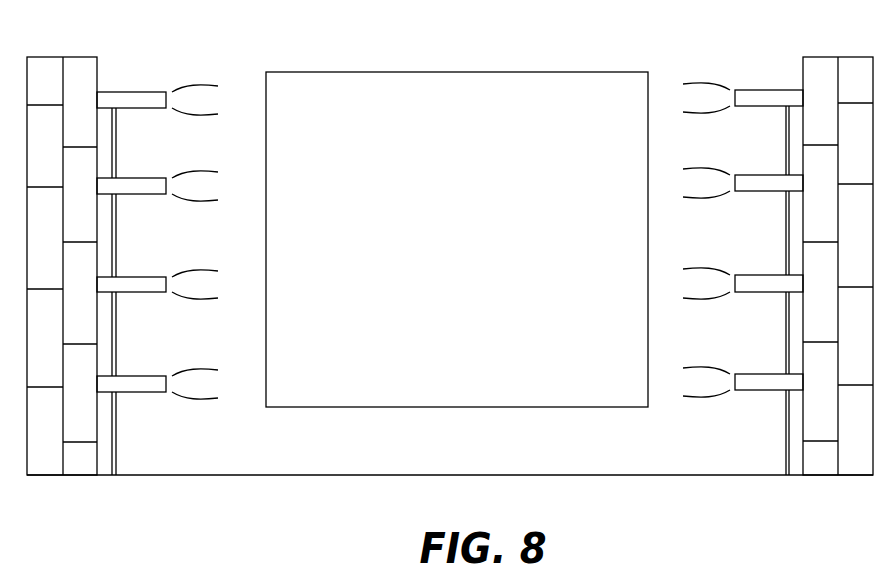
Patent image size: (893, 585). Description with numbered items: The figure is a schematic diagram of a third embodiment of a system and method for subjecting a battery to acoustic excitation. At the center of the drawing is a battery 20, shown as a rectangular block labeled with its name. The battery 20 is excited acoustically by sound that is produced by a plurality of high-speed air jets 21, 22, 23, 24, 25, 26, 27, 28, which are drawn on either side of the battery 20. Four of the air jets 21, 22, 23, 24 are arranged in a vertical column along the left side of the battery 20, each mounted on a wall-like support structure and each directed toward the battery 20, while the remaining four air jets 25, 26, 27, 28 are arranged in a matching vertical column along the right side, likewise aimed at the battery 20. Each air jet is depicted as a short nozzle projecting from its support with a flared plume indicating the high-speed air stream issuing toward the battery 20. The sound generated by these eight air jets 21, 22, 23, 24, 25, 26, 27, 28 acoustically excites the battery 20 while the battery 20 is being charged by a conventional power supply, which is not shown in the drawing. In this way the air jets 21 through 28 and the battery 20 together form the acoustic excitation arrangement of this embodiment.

The battery 20 is at (474, 70).
The high-speed air jet 21 is at (145, 90).
The high-speed air jet 22 is at (145, 176).
The high-speed air jet 23 is at (145, 275).
The high-speed air jet 24 is at (145, 374).
The high-speed air jet 25 is at (754, 88).
The high-speed air jet 26 is at (754, 173).
The high-speed air jet 27 is at (754, 273).
The high-speed air jet 28 is at (754, 372).